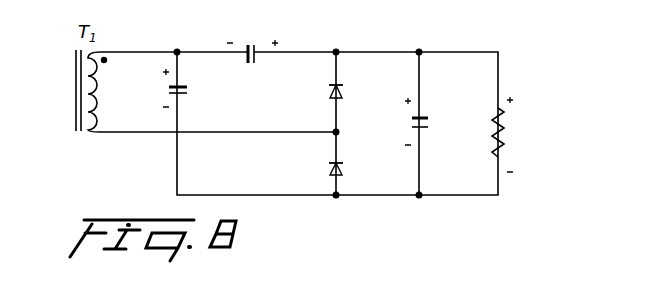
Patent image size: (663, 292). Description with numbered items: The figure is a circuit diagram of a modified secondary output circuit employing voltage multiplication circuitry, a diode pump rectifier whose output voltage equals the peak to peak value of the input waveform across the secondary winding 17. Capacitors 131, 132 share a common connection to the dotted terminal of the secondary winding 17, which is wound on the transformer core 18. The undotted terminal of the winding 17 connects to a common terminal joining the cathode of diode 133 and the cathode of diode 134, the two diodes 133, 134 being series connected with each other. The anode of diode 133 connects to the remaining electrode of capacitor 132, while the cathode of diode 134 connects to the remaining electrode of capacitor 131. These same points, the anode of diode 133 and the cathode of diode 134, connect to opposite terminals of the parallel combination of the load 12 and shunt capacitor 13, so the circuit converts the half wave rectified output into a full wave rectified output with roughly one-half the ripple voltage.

The transformer core 18 is at (77, 97).
The secondary winding 17 is at (96, 104).
The capacitor 132 is at (184, 85).
The capacitor 131 is at (252, 63).
The diode 134 is at (328, 90).
The diode 133 is at (328, 168).
The shunt capacitor 13 is at (411, 122).
The load 12 is at (492, 141).